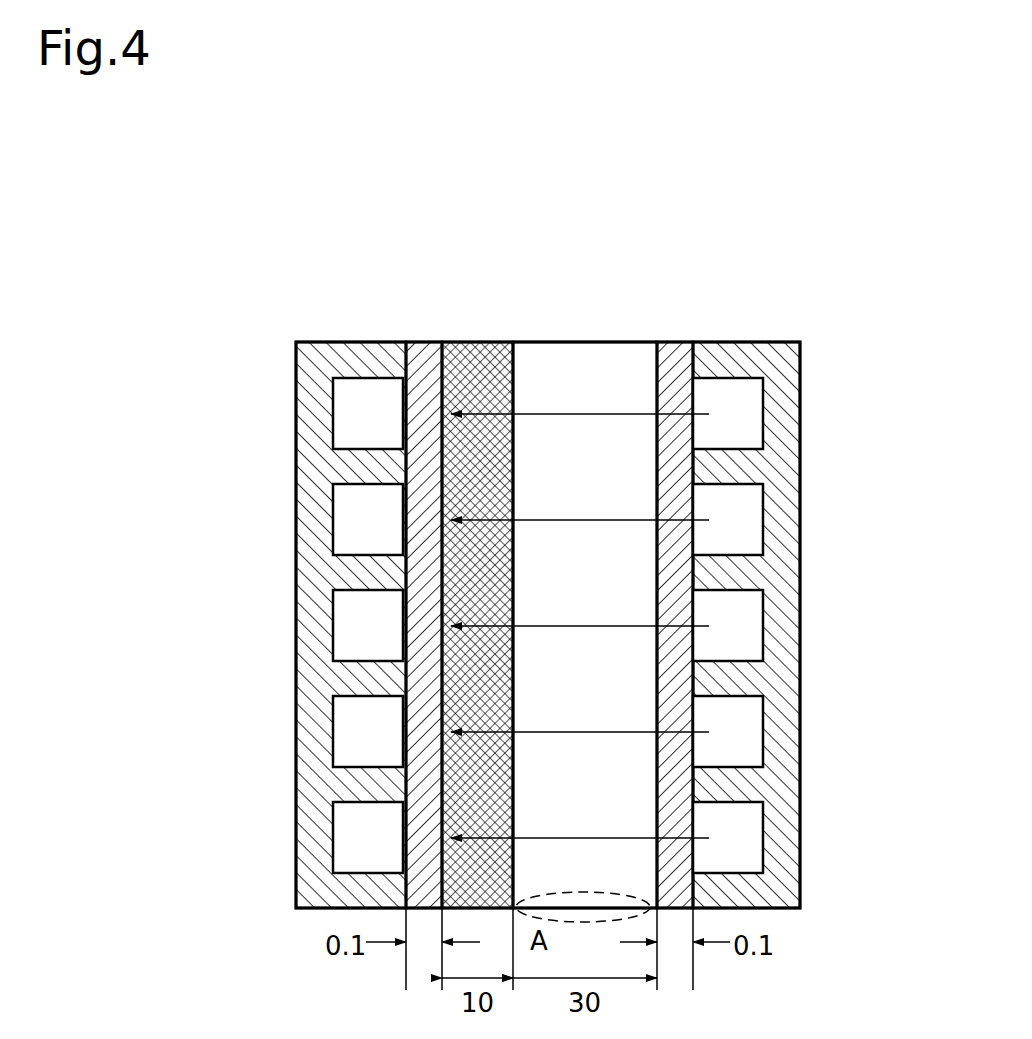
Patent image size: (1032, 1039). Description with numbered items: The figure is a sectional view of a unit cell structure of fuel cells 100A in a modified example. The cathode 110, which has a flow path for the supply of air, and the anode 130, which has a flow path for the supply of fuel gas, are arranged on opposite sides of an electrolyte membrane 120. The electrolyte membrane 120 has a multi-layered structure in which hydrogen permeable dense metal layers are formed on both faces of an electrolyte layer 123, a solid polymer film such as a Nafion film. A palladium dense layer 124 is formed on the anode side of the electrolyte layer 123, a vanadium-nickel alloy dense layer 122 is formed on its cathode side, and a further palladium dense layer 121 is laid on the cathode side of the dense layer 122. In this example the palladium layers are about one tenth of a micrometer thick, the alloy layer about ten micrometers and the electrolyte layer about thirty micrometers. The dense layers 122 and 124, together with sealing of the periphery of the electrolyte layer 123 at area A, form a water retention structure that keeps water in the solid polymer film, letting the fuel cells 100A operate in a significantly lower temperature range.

The fuel cells 100A is at (784, 228).
The cathode 110 is at (329, 342).
The electrolyte membrane 120 is at (556, 547).
The Pd dense layer 121 is at (416, 342).
The V-Ni dense layer 122 is at (480, 342).
The electrolyte layer 123 is at (571, 342).
The Pd dense layer 124 is at (683, 598).
The anode 130 is at (735, 342).